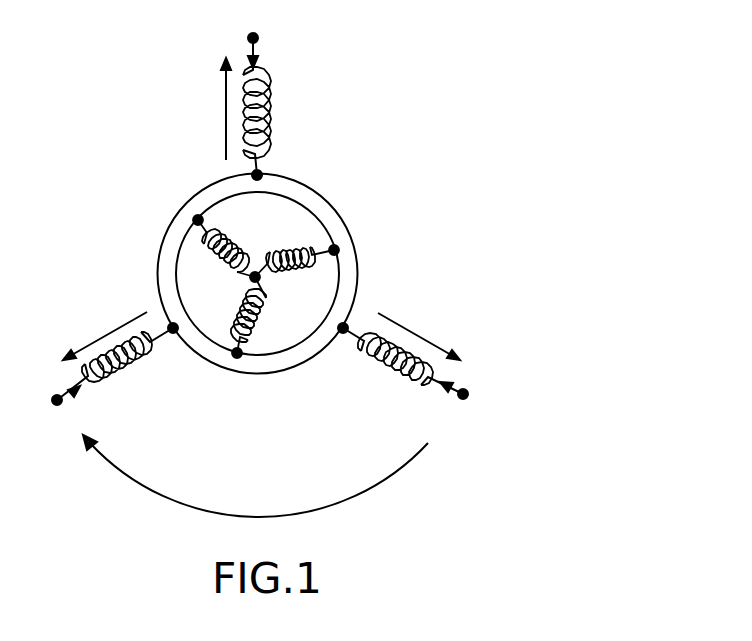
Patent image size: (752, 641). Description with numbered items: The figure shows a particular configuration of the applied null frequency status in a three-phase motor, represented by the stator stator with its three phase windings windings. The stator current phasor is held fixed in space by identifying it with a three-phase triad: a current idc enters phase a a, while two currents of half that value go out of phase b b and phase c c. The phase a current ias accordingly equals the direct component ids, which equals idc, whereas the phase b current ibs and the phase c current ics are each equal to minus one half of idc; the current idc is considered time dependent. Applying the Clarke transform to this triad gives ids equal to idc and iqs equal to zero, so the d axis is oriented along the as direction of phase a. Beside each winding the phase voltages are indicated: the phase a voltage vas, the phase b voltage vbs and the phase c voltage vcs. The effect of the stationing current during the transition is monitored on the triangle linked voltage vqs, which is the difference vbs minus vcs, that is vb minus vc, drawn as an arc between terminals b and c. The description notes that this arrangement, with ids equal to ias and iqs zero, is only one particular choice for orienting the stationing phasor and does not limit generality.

The phase a is at (256, 92).
The phase b is at (106, 378).
The phase c is at (412, 373).
The phase a current ias is at (339, 56).
The phase b current ibs is at (146, 402).
The phase c current ics is at (375, 402).
The phase a voltage vas is at (209, 109).
The phase b voltage vbs is at (105, 334).
The phase c voltage vcs is at (419, 329).
The triangle linked voltage vqs is at (255, 476).
The element stator is at (258, 274).
The stator windings is at (266, 286).